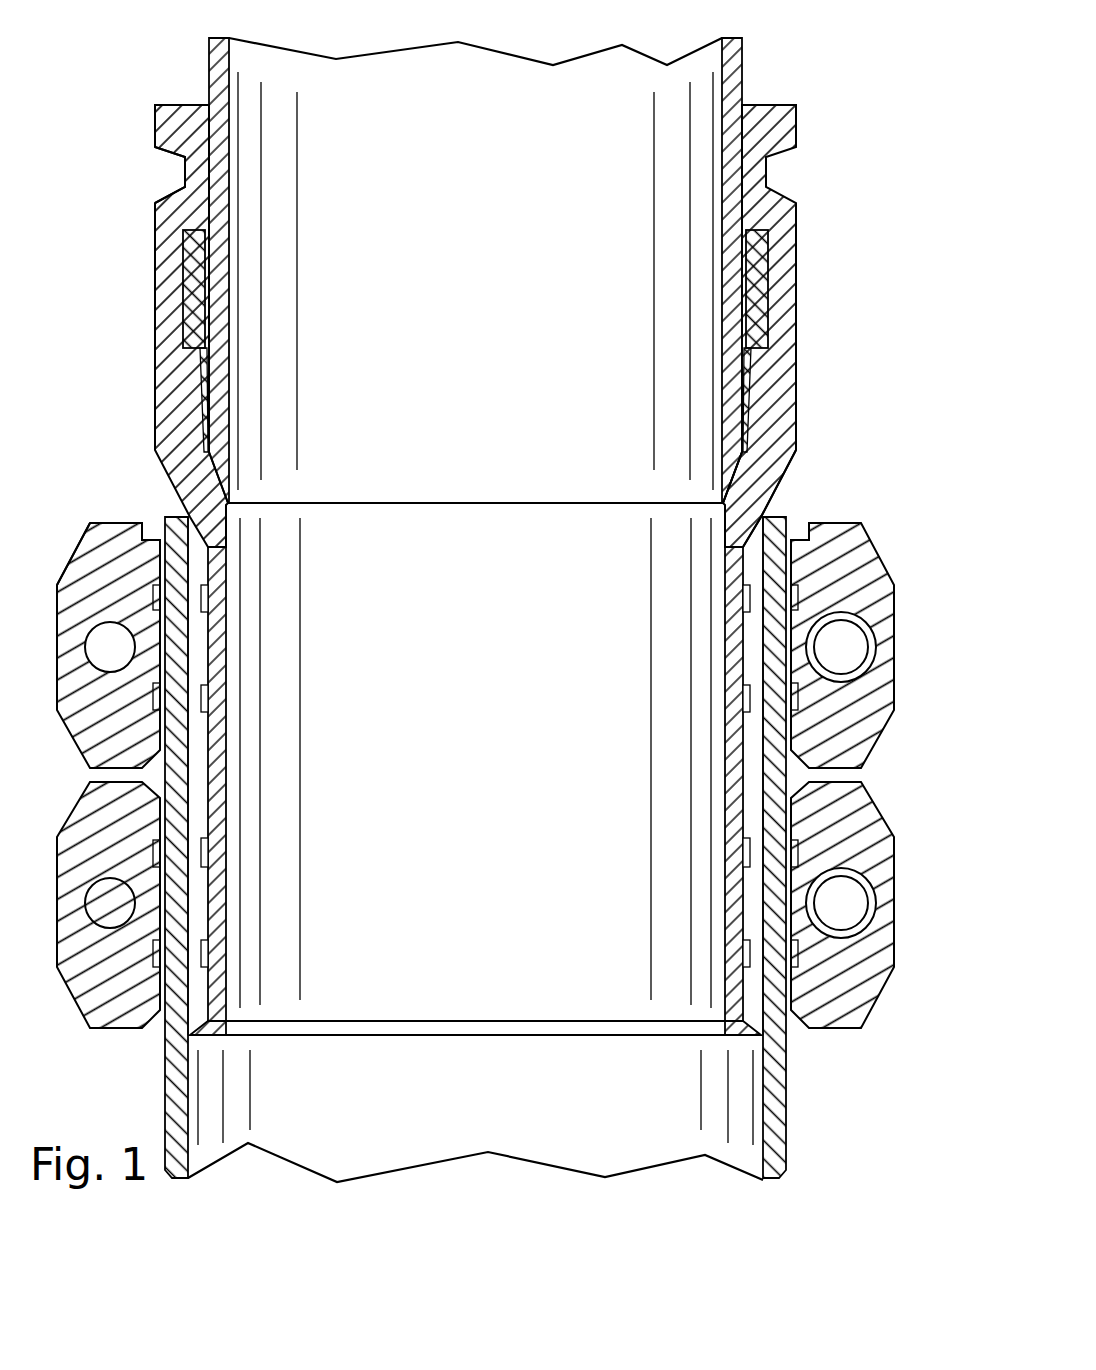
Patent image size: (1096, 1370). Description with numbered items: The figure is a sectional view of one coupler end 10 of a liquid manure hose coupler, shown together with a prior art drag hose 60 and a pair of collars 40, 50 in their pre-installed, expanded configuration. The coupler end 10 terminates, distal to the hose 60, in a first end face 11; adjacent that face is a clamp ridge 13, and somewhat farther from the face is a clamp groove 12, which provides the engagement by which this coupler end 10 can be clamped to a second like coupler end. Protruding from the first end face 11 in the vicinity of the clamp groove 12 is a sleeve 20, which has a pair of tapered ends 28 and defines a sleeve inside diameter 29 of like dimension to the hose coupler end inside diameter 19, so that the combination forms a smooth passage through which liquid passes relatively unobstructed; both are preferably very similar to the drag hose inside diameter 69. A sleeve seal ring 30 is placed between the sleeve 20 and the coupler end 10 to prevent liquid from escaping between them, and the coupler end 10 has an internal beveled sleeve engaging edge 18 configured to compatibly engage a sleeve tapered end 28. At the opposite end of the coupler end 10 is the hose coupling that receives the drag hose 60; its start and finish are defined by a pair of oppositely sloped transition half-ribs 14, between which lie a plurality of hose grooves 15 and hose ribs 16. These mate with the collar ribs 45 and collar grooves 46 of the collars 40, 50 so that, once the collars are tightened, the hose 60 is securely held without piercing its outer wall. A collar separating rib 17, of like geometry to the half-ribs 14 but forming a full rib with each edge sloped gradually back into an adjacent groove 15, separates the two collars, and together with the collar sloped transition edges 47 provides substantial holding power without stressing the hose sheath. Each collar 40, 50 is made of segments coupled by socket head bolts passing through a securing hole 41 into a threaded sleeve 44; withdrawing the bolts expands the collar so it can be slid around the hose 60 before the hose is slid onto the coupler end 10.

The coupler end 10 is at (150, 280).
The first end face 11 is at (172, 105).
The clamp groove 12 is at (185, 173).
The clamp ridge 13 is at (155, 128).
The transition half-ribs 14 is at (228, 518).
The hose grooves 15 is at (175, 540).
The hose ribs 16 is at (206, 598).
The collar separating rib 17 is at (195, 775).
The beveled sleeve engaging edge 18 is at (780, 482).
The hose coupler end inside diameter 19 is at (458, 758).
The sleeve 20 is at (748, 74).
The sleeve tapered end 28 is at (723, 492).
The sleeve inside diameter 29 is at (458, 377).
The sleeve seal ring 30 is at (773, 248).
The collar 40 is at (86, 534).
The securing hole 41 is at (108, 647).
The threaded sleeve 44 is at (845, 647).
The collar ribs 45 is at (118, 565).
The collar grooves 46 is at (110, 600).
The collar sloped transition edges 47 is at (130, 742).
The collar 50 is at (872, 790).
The drag hose 60 is at (792, 1128).
The drag hose inside diameter 69 is at (458, 1103).